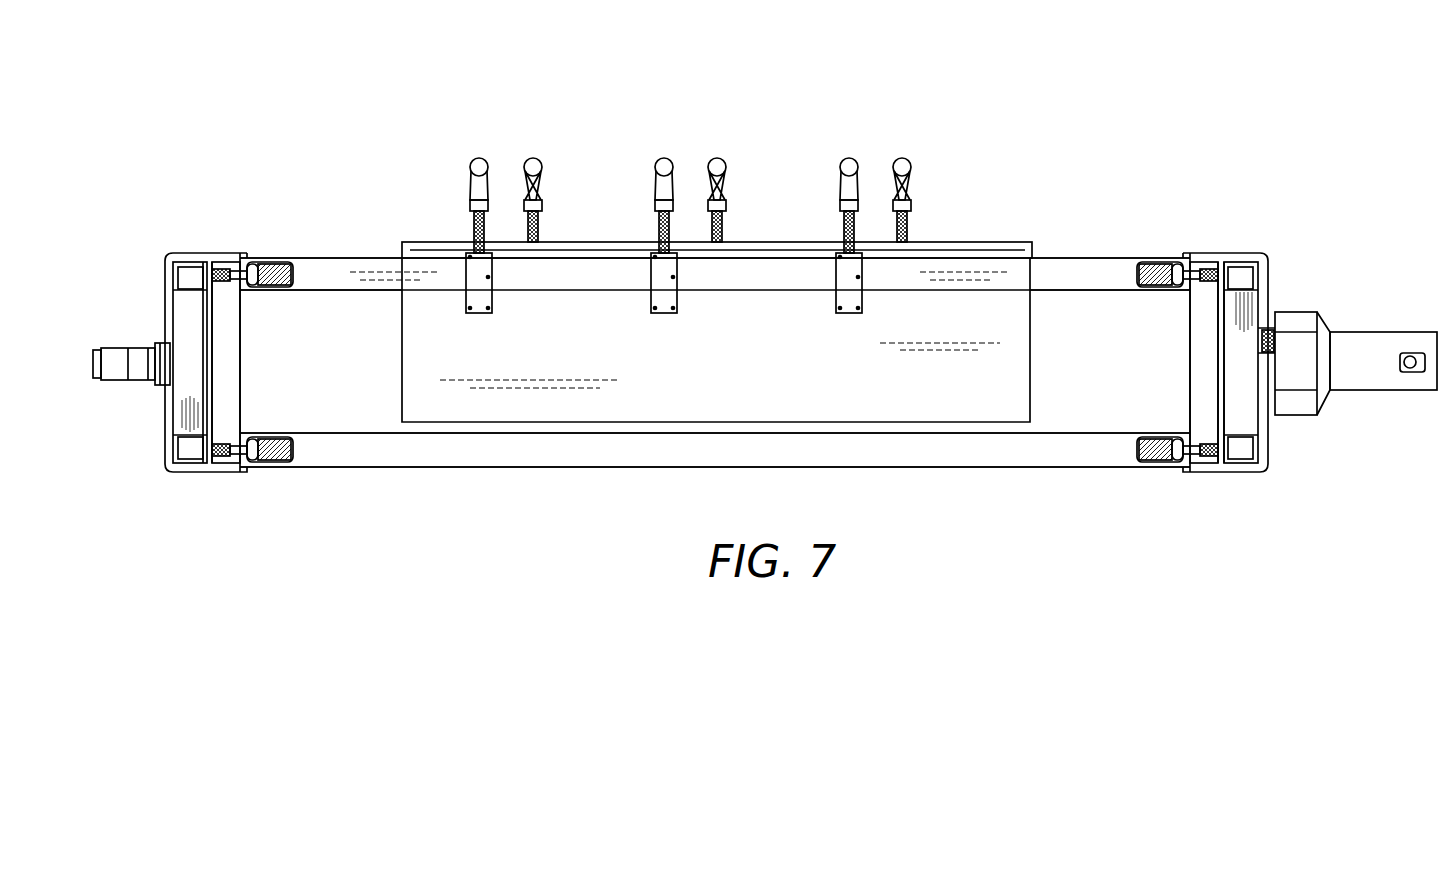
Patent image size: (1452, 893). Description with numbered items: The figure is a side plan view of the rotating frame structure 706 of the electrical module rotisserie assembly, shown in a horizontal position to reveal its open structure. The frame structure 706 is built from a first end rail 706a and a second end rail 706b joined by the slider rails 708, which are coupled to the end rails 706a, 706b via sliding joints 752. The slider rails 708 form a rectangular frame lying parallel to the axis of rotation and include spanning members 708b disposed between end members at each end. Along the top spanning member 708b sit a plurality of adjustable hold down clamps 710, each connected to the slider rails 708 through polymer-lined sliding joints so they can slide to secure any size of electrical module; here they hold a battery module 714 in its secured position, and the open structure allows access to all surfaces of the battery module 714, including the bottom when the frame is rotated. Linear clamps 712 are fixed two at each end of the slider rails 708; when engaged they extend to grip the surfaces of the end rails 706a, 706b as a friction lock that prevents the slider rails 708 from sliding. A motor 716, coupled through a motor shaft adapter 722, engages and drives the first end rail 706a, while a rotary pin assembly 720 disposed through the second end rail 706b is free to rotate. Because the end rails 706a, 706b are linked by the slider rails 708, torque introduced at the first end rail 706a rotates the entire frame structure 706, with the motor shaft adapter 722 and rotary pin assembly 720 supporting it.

The frame structure 706 is at (1052, 110).
The first end rail 706a is at (1268, 305).
The second end rail 706b is at (172, 308).
The slider rails 708 is at (352, 262).
The spanning members 708b is at (1108, 278).
The adjustable hold down clamps 710 is at (516, 124).
The linear clamps 712 is at (268, 243).
The battery module 714 is at (1012, 325).
The motor 716 is at (1350, 395).
The rotary pin assembly 720 is at (137, 376).
The motor shaft adapter 722 is at (1268, 400).
The sliding joints 752 is at (1247, 240).